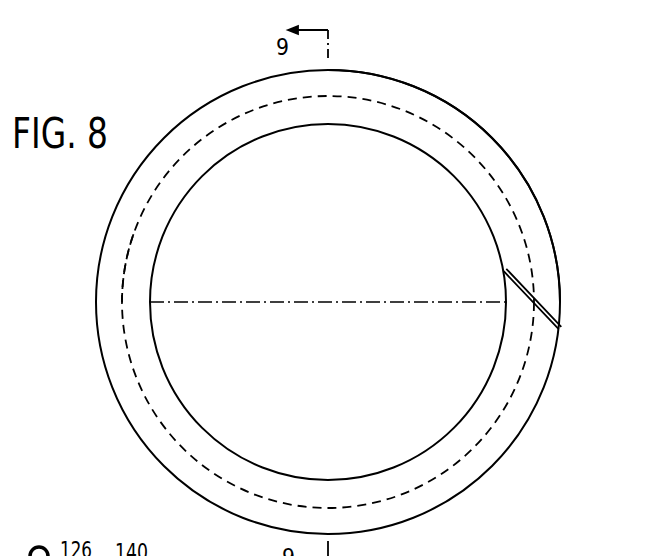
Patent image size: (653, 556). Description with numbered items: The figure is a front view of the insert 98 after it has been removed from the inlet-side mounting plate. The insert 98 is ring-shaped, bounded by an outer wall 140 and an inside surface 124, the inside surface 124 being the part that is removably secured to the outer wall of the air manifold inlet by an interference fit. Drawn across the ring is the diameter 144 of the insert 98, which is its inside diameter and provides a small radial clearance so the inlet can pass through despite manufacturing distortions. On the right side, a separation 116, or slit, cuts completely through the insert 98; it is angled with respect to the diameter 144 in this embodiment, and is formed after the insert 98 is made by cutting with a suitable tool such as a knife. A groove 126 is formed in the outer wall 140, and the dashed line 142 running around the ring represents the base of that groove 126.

The insert 98 is at (460, 92).
The outer wall 140 is at (508, 152).
The groove 126 is at (194, 136).
The dashed line 142 is at (130, 243).
The inside surface 124 is at (211, 436).
The diameter 144 is at (443, 304).
The separation 116 is at (562, 331).